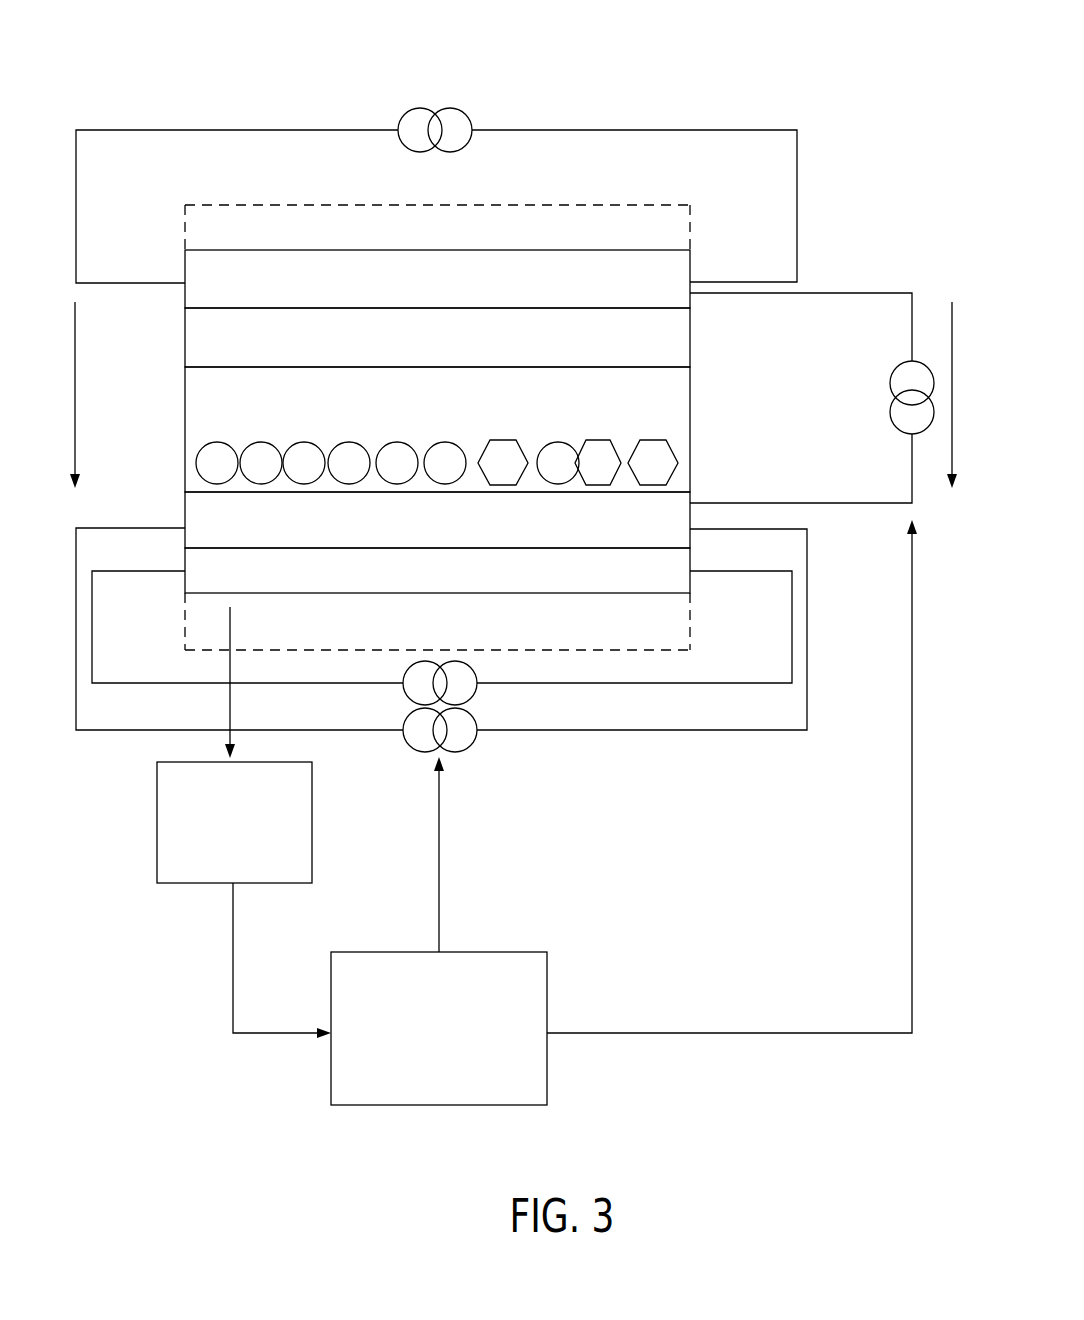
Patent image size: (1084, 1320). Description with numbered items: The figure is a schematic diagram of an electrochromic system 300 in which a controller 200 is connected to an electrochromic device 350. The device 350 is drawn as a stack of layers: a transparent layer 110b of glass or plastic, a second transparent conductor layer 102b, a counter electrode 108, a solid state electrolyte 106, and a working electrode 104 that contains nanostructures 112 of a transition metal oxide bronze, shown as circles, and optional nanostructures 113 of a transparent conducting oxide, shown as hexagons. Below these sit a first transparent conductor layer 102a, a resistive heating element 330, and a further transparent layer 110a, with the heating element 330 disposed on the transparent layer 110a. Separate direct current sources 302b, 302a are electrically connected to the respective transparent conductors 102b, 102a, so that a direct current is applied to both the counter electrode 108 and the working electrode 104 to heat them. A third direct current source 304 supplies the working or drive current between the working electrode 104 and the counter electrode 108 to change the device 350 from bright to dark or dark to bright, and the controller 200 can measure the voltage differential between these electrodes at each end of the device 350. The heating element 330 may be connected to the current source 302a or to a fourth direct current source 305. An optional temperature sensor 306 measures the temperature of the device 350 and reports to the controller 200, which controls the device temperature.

The electrochromic system 300 is at (836, 67).
The electrochromic device 350 is at (726, 205).
The direct current source 302b is at (436, 166).
The direct current source 302a is at (441, 649).
The third direct current source 304 is at (812, 398).
The fourth direct current source 305 is at (442, 647).
The temperature sensor 306 is at (280, 745).
The controller 200 is at (575, 812).
The transparent layer 110b is at (420, 207).
The transparent layer 110a is at (391, 621).
The second transparent conductor layer 102b is at (390, 262).
The first transparent conductor layer 102a is at (391, 519).
The counter electrode 108 is at (395, 337).
The solid state electrolyte 106 is at (482, 425).
The working electrode 104 is at (461, 438).
The nanostructures 112 is at (231, 438).
The nanostructures 113 is at (703, 487).
The heating element 330 is at (395, 566).